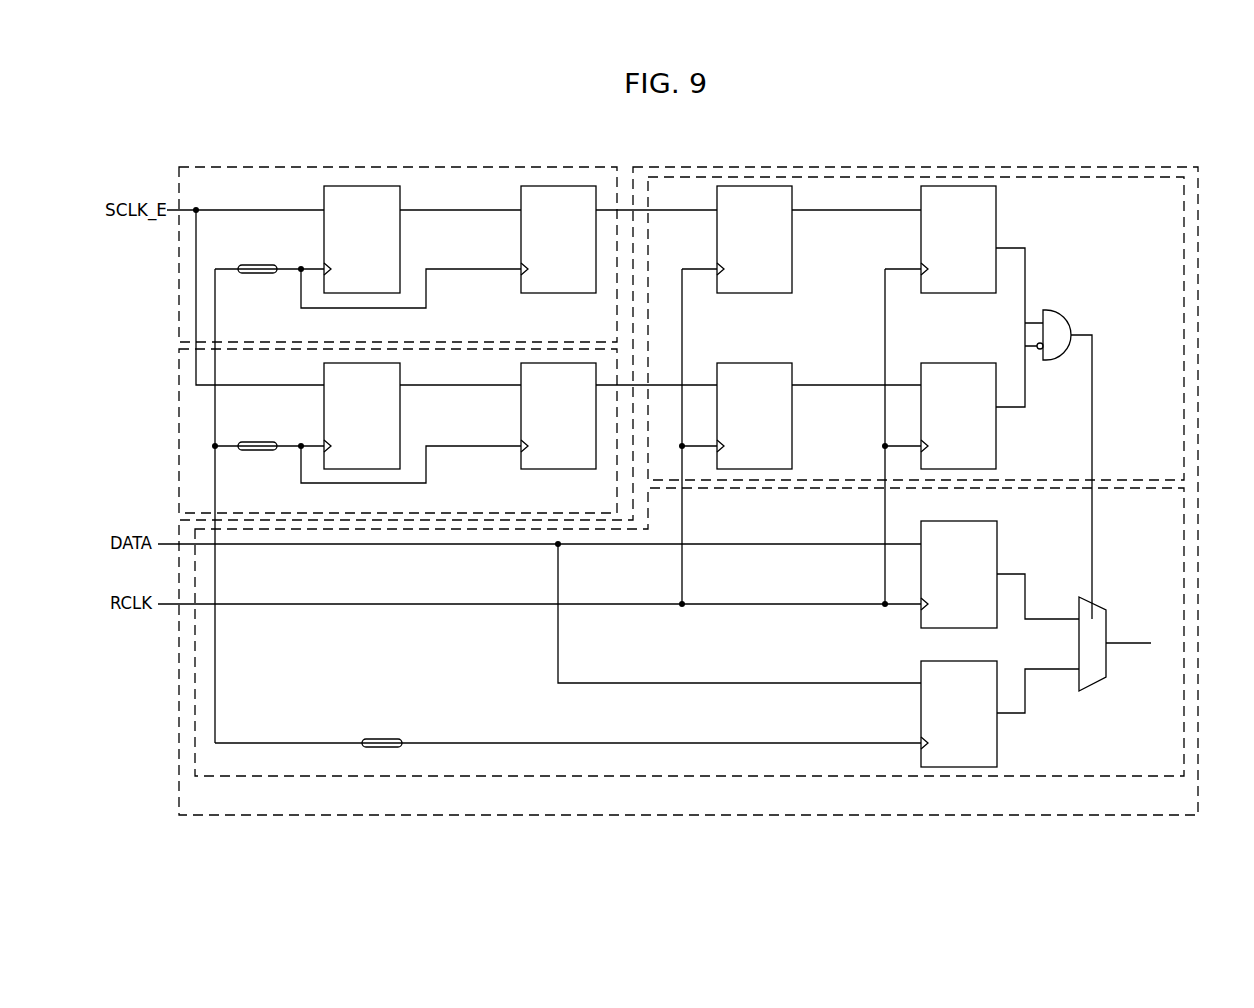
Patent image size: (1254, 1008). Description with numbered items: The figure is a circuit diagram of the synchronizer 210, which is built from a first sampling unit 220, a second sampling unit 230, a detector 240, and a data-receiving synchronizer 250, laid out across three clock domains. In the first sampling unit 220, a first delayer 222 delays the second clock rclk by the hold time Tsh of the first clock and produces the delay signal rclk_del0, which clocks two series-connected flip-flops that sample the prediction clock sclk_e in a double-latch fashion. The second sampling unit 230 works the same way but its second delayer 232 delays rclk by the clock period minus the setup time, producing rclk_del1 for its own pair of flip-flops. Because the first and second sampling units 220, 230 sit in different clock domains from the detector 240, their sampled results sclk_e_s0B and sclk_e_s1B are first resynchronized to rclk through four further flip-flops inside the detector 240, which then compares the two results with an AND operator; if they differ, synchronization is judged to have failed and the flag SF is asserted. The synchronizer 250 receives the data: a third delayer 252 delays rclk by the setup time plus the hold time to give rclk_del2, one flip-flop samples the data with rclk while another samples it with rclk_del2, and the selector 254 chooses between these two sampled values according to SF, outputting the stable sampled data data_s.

The synchronizer 210 is at (1113, 155).
The first sampling unit 220 is at (179, 193).
The first delayer 222 is at (260, 276).
The second sampling unit 230 is at (179, 410).
The second delayer 232 is at (258, 452).
The detector 240 is at (1184, 293).
The synchronizer 250 is at (1184, 560).
The third delayer 252 is at (383, 748).
The selector 254 is at (1102, 607).